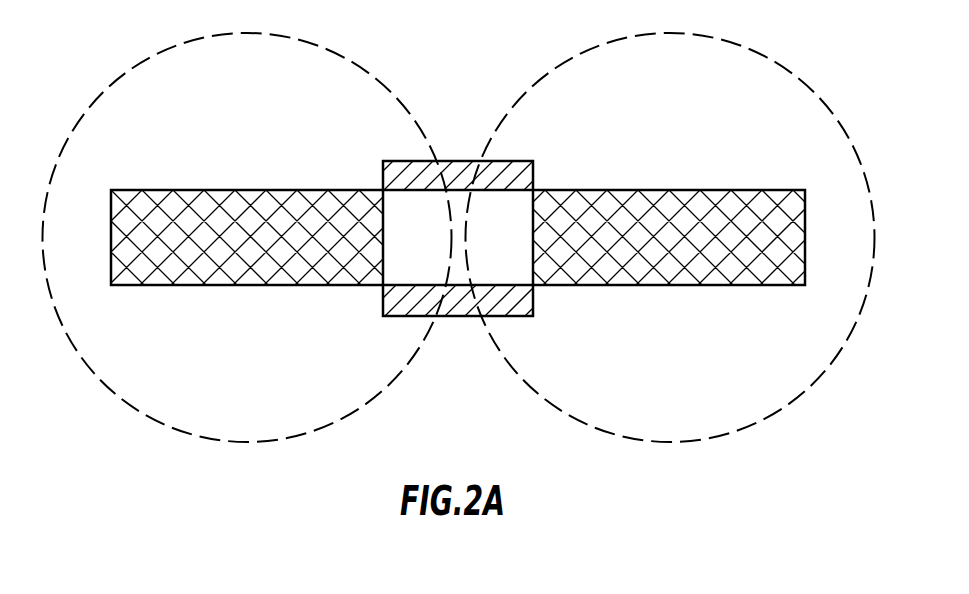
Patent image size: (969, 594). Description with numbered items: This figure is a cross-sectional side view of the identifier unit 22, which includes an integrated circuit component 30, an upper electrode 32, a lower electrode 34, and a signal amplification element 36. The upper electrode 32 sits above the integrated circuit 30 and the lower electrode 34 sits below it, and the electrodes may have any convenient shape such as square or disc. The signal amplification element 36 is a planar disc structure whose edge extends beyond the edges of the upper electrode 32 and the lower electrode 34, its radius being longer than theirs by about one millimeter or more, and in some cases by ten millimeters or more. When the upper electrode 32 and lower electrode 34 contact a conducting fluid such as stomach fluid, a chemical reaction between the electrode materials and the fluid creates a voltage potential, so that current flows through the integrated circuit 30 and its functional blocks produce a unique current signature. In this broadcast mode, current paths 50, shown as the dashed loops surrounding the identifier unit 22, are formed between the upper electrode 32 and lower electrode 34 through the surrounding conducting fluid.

The identifier unit 22 is at (484, 233).
The integrated circuit component 30 is at (471, 248).
The upper electrode 32 is at (510, 161).
The lower electrode 34 is at (501, 316).
The signal amplification element 36 is at (187, 286).
The current paths 50 is at (223, 443).